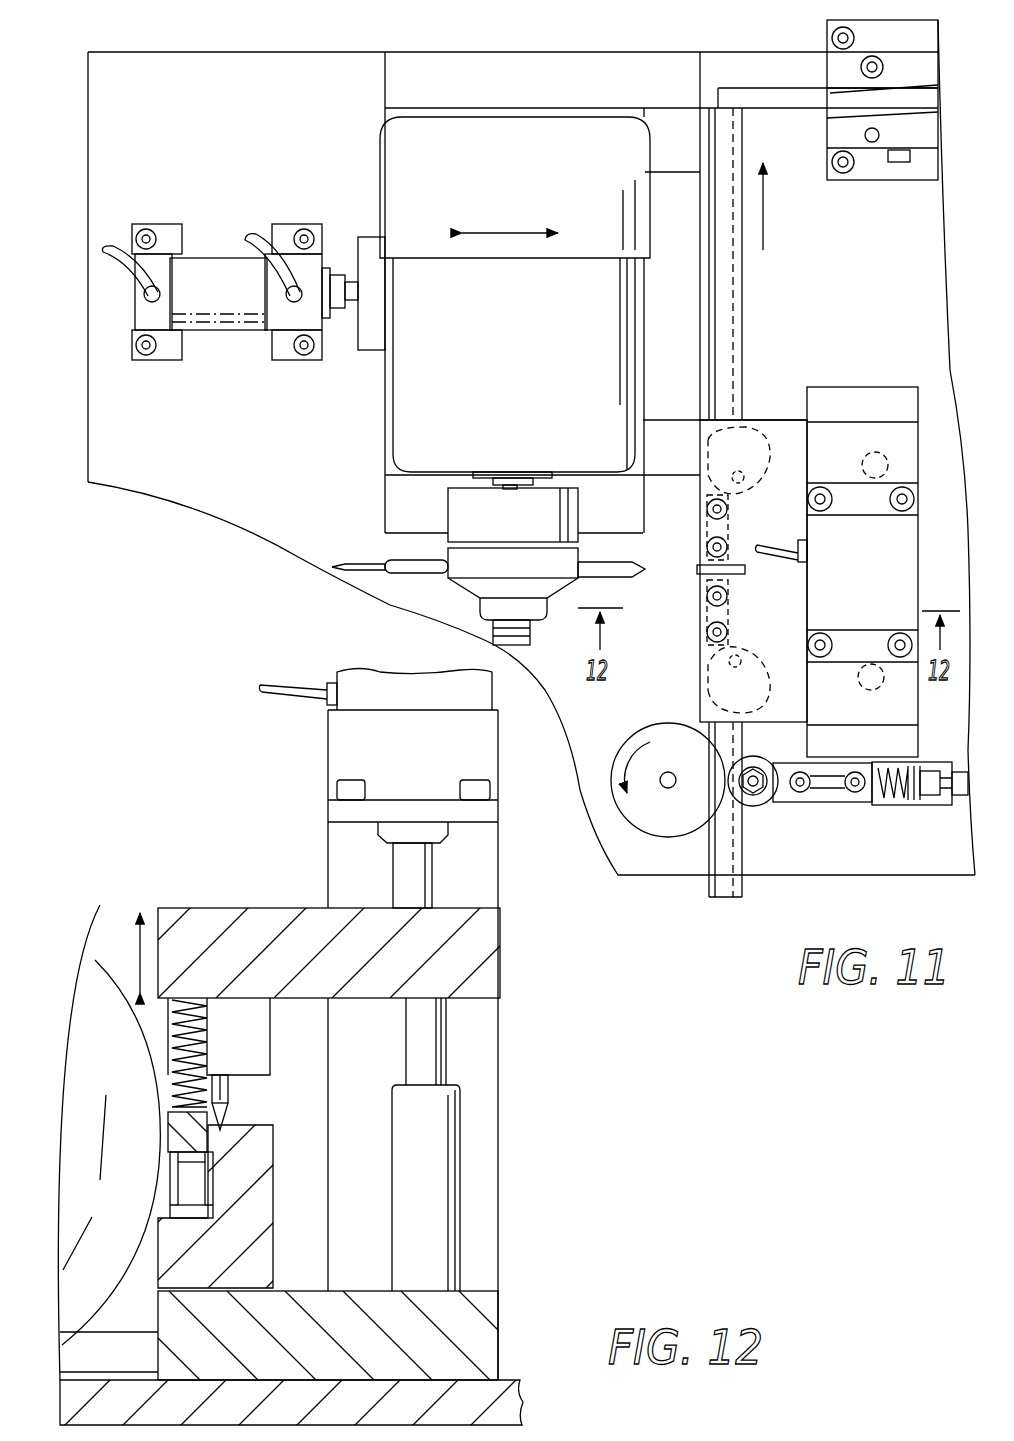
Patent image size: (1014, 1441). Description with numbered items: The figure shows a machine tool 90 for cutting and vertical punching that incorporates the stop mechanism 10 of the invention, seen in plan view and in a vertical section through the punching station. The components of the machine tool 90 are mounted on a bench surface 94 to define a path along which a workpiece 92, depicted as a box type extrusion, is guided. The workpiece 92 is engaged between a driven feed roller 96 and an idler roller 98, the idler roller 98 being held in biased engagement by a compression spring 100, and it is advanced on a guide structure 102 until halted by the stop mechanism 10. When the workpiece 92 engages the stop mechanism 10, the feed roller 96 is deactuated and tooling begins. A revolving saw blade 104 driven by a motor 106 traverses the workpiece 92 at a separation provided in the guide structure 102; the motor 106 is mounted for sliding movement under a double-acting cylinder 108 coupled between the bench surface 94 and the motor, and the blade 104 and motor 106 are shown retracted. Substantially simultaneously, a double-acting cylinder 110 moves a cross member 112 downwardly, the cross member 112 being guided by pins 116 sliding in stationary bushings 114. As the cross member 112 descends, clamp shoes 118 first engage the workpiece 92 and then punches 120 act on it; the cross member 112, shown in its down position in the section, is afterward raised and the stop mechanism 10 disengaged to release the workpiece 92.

In FIG. 11, the machine tool 90 is at (513, 49).
In FIG. 11, the stop mechanism 10 is at (827, 42).
In FIG. 11, the bench surface 94 is at (862, 256).
In FIG. 12, the bench surface 94 is at (500, 1380).
In FIG. 11, the motor 106 is at (528, 377).
In FIG. 11, the double-acting cylinder 108 is at (225, 303).
In FIG. 11, the saw blade 104 is at (355, 563).
In FIG. 12, the saw blade 104 is at (109, 925).
In FIG. 11, the workpiece 92 is at (738, 882).
In FIG. 12, the workpiece 92 is at (170, 1188).
In FIG. 11, the double-acting cylinder 110 is at (872, 578).
In FIG. 12, the double-acting cylinder 110 is at (328, 755).
In FIG. 11, the pins 116 is at (868, 458).
In FIG. 12, the pins 116 is at (435, 1054).
In FIG. 11, the punches 120 is at (705, 462).
In FIG. 12, the punches 120 is at (230, 1092).
In FIG. 11, the clamp shoes 118 is at (700, 518).
In FIG. 12, the clamp shoes 118 is at (168, 1127).
In FIG. 11, the driven feed roller 96 is at (643, 733).
In FIG. 11, the idler roller 98 is at (760, 802).
In FIG. 11, the compression spring 100 is at (897, 806).
In FIG. 11, the guide structure 102 is at (695, 855).
In FIG. 12, the guide structure 102 is at (277, 1175).
In FIG. 12, the cross member 112 is at (272, 908).
In FIG. 12, the stationary bushings 114 is at (438, 1205).